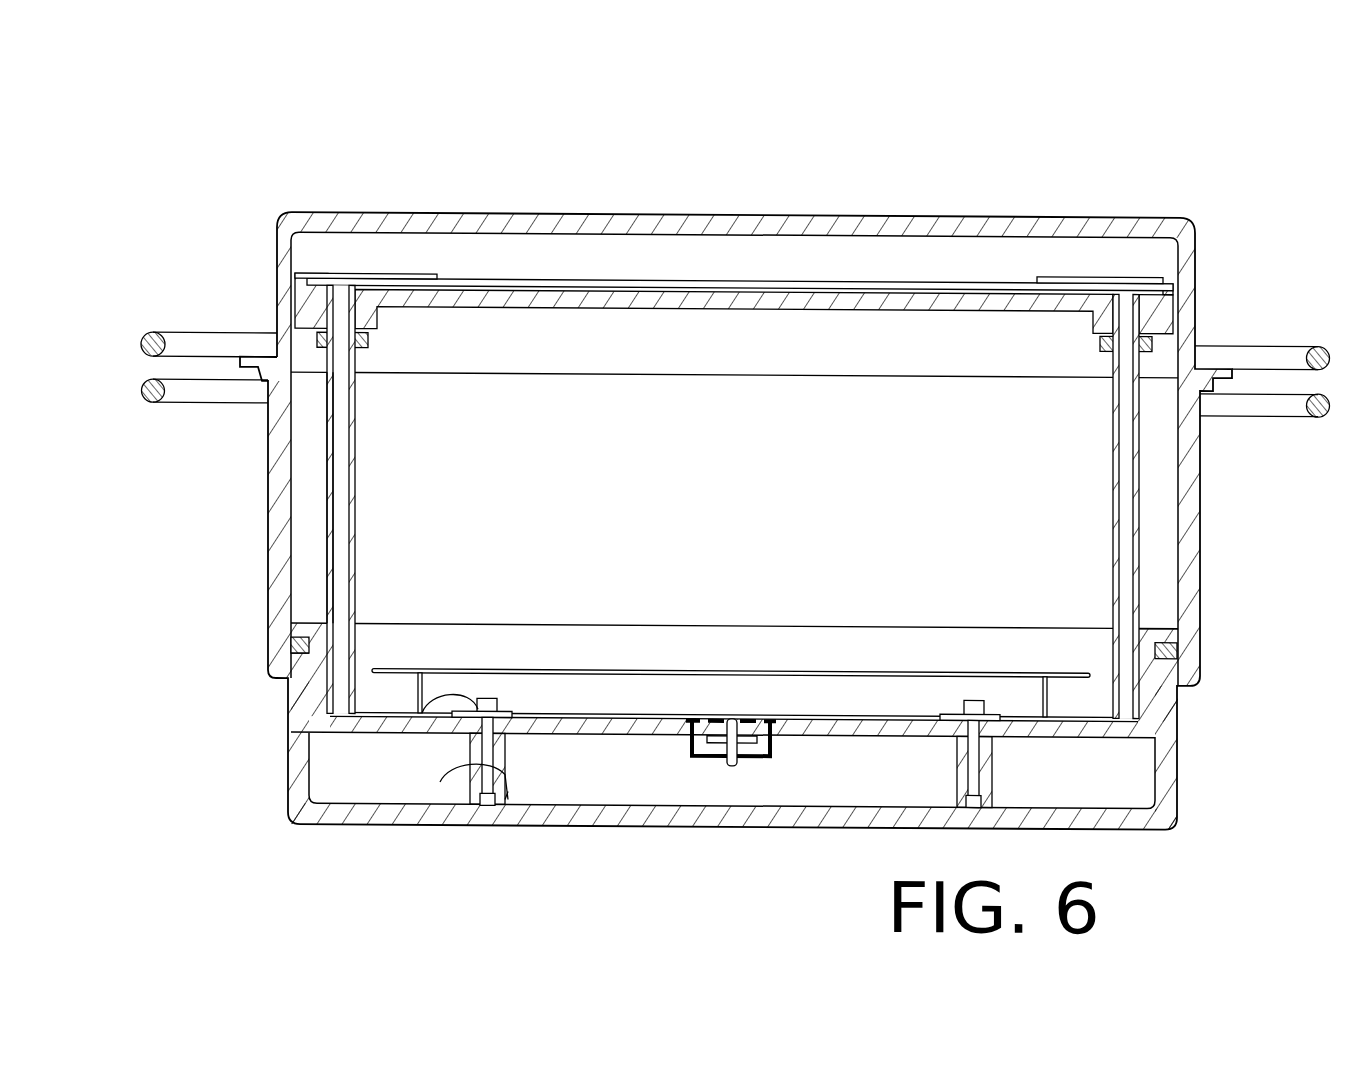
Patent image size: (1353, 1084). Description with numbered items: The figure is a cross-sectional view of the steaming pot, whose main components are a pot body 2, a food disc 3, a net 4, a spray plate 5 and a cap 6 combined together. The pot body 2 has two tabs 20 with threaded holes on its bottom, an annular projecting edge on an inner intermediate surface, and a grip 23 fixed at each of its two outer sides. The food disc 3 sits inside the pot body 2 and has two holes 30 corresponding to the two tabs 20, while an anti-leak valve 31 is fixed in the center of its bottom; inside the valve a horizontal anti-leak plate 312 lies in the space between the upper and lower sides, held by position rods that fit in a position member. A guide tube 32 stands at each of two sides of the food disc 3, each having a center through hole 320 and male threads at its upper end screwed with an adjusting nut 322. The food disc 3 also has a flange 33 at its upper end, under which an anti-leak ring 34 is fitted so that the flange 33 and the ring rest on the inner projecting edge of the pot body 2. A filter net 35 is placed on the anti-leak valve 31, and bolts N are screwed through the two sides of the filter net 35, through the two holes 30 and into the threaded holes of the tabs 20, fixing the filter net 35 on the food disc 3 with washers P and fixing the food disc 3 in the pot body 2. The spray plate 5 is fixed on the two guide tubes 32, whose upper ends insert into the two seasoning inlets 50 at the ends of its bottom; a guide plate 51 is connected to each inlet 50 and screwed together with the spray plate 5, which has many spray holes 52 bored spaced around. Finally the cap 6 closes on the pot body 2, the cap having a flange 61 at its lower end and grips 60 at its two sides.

The pot body 2 is at (1200, 546).
The food disc 3 is at (322, 676).
The net 4 is at (560, 672).
The spray plate 5 is at (697, 294).
The cap 6 is at (622, 218).
The tabs 20 is at (440, 781).
The grip 23 is at (1273, 396).
The holes 30 is at (477, 722).
The anti-leak valve 31 is at (764, 752).
The horizontal anti-leak plate 312 is at (742, 740).
The guide tube 32 is at (322, 451).
The center through hole 320 is at (333, 497).
The adjusting nut 322 is at (318, 337).
The flange 33 is at (293, 636).
The anti-leak ring 34 is at (300, 648).
The filter net 35 is at (622, 711).
The seasoning inlets 50 is at (353, 287).
The guide plate 51 is at (330, 273).
The spray holes 52 is at (490, 285).
The terminal bracket 60 is at (1195, 362).
The flange 61 is at (1290, 347).
The washers P is at (478, 716).
The bolts N is at (505, 798).